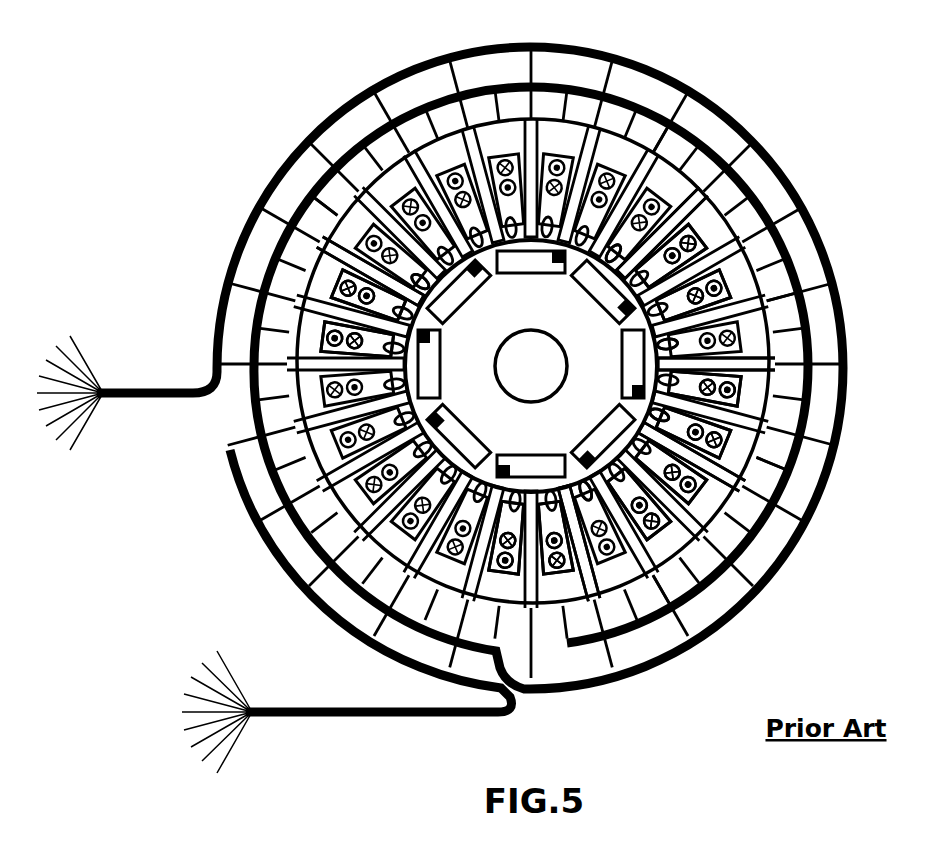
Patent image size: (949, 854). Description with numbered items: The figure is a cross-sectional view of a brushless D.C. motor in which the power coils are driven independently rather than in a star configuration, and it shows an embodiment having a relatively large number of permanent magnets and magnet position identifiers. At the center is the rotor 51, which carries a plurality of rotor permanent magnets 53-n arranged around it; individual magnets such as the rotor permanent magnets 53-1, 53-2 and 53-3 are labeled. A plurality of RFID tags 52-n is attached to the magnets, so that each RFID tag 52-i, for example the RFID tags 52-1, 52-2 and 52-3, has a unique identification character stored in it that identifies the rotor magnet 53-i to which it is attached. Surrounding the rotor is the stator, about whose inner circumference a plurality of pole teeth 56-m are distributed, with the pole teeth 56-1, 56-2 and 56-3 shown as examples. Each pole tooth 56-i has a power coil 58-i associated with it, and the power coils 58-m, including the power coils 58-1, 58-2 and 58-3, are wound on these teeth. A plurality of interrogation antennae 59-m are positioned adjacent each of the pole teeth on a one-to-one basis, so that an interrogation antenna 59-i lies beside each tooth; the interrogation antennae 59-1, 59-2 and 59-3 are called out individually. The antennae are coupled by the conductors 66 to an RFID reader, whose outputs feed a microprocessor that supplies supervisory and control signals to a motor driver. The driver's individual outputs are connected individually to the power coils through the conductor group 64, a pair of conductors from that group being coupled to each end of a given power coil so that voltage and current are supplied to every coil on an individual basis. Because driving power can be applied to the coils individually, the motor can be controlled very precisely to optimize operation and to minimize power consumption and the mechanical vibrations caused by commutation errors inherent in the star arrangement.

The rotor 51 is at (574, 203).
The RFID tag 52-i is at (335, 342).
The RFID tags 52-n is at (788, 278).
The RFID tag 52-1 is at (787, 431).
The RFID tag 52-2 is at (640, 540).
The RFID tag 52-3 is at (507, 585).
The rotor magnet 53-i is at (408, 285).
The rotor permanent magnets 53-n is at (762, 220).
The rotor permanent magnet 53-1 is at (794, 359).
The rotor permanent magnet 53-2 is at (655, 485).
The rotor permanent magnet 53-3 is at (660, 592).
The pole tooth 56-i is at (415, 278).
The pole teeth 56-m is at (747, 202).
The pole tooth 56-1 is at (792, 334).
The pole tooth 56-2 is at (768, 465).
The pole tooth 56-3 is at (658, 580).
The power coil 58-i is at (338, 287).
The power coils 58-m is at (750, 263).
The power coil 58-1 is at (798, 386).
The power coil 58-2 is at (749, 517).
The power coil 58-3 is at (596, 623).
The interrogation antenna 59-i is at (345, 220).
The interrogation antennae 59-m is at (640, 178).
The interrogation antenna 59-1 is at (838, 294).
The interrogation antenna 59-2 is at (831, 467).
The interrogation antenna 59-3 is at (722, 619).
The conductor group 64 is at (330, 717).
The conductors 66 is at (160, 389).